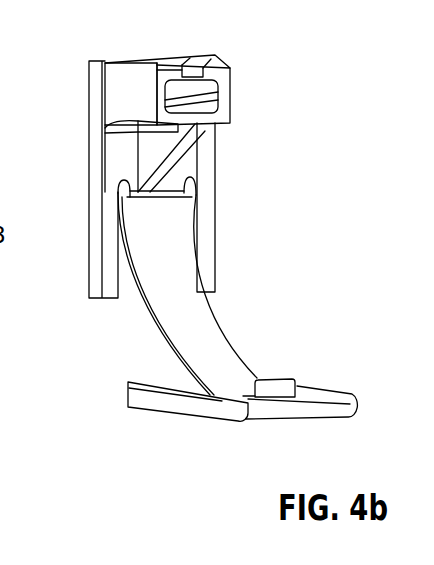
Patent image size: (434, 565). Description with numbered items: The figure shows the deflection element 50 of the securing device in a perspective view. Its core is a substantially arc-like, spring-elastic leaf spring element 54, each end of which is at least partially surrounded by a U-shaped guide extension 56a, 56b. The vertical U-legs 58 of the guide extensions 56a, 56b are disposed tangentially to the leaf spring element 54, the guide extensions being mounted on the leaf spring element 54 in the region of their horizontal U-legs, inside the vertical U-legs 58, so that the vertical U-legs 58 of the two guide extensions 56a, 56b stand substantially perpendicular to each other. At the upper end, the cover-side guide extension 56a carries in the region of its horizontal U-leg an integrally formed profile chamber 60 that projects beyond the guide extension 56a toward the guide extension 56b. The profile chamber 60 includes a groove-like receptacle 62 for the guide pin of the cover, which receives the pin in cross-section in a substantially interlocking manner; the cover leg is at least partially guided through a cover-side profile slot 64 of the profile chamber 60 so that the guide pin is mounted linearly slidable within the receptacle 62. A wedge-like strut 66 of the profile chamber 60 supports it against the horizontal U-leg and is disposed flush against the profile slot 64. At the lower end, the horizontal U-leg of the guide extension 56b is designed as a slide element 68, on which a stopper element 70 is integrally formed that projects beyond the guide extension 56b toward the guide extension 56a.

The deflection element 50 is at (324, 238).
The leaf spring element 54 is at (196, 329).
The cover-side guide extension 56a is at (123, 157).
The guide extension 56b is at (351, 358).
The vertical U-leg 58 is at (207, 199).
The profile chamber 60 is at (228, 72).
The receptacle 62 is at (194, 96).
The profile slot 64 is at (131, 56).
The strut 66 is at (190, 150).
The slide element 68 is at (323, 376).
The stopper element 70 is at (282, 380).